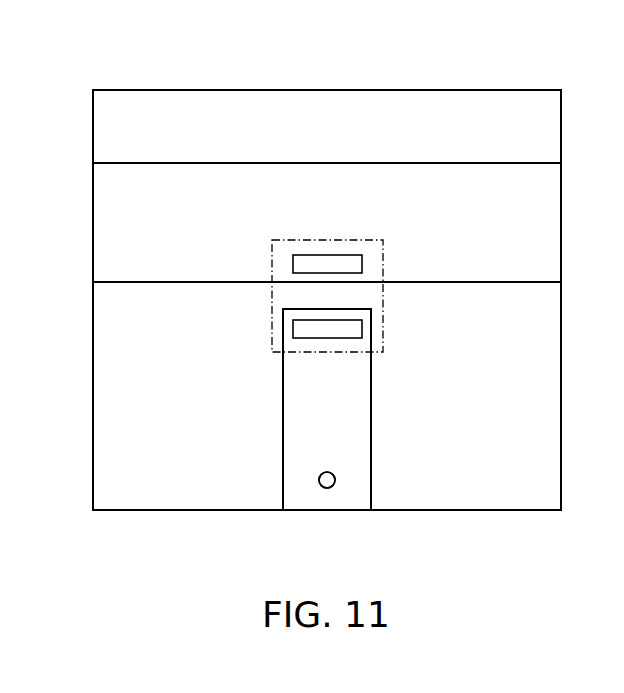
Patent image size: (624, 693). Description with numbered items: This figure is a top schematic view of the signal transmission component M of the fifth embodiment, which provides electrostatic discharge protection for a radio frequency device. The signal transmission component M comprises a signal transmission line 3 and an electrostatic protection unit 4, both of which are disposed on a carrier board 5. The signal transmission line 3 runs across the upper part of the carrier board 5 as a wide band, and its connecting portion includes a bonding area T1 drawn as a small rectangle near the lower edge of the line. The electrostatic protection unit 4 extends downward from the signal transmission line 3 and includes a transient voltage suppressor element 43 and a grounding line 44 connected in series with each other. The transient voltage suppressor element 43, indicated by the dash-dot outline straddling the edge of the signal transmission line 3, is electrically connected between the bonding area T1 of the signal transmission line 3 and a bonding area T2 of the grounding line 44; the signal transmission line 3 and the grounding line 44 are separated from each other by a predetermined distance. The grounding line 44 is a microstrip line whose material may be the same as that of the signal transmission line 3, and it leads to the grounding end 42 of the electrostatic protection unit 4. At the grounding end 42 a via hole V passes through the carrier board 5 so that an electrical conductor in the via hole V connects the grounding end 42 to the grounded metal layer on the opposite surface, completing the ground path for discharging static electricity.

The signal transmission component M is at (113, 45).
The signal transmission line 3 is at (118, 163).
The carrier board 5 is at (93, 362).
The electrostatic protection unit 4 is at (283, 397).
The grounding end 42 is at (337, 468).
The transient voltage suppressor element 43 is at (272, 310).
The grounding line 44 is at (328, 345).
The bonding area T1 is at (356, 264).
The bonding area T2 is at (356, 328).
The via hole V is at (319, 478).